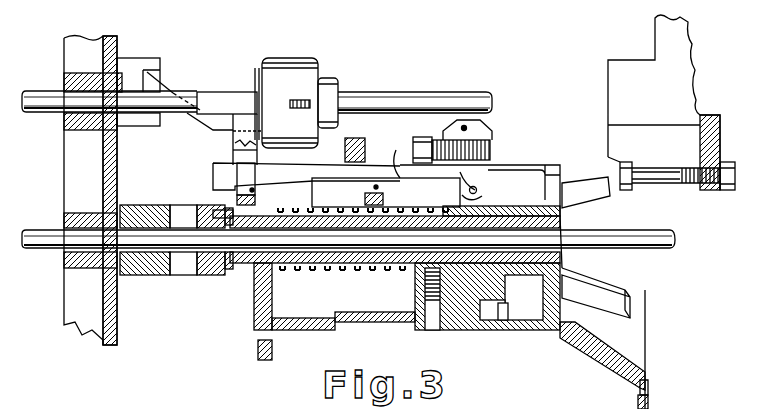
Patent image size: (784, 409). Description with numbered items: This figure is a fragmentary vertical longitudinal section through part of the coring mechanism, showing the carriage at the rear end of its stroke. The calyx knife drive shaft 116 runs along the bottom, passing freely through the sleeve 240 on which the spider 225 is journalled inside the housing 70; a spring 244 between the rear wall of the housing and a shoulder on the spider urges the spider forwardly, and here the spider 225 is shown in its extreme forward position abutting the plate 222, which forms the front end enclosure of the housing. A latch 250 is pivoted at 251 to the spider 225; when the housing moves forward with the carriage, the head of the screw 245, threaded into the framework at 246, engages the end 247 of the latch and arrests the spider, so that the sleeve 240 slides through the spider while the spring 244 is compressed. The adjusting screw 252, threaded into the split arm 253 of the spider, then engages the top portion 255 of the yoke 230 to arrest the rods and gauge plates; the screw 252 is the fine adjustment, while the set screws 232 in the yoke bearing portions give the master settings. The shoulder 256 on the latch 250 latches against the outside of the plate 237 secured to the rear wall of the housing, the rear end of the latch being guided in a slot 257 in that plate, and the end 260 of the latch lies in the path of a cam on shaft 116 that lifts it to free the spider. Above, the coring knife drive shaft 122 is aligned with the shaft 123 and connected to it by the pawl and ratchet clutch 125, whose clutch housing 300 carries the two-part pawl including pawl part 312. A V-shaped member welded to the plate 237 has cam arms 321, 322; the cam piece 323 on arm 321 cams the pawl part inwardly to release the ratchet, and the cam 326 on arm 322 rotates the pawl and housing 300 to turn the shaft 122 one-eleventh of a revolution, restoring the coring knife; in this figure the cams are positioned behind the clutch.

The housing 70 is at (525, 165).
The calyx knife drive shaft 116 is at (610, 235).
The coring knife drive shaft 122 is at (370, 95).
The shaft 123 is at (70, 98).
The pawl and ratchet clutch 125 is at (296, 51).
The plate 222 is at (580, 275).
The spider 225 is at (420, 272).
The yoke 230 is at (345, 212).
The set screw 232 is at (378, 187).
The plate 237 is at (249, 184).
The sleeve 240 is at (560, 221).
The spring 244 is at (284, 268).
The screw 245 is at (626, 163).
The framework of the machine 246 is at (722, 166).
The end of latch 247 is at (478, 172).
The latch 250 is at (404, 157).
The pivot 251 is at (482, 188).
The adjusting screw 252 is at (421, 138).
The split arm 253 is at (480, 128).
The top portion of yoke 255 is at (370, 135).
The shoulder 256 is at (270, 188).
The slot 257 is at (258, 153).
The end of latch 260 is at (222, 184).
The clutch housing 300 is at (300, 94).
The pawl part 312 is at (293, 103).
The cam arm 321 is at (238, 137).
The cam arm 322 is at (240, 151).
The cam piece 323 is at (232, 97).
The cam 326 is at (166, 86).